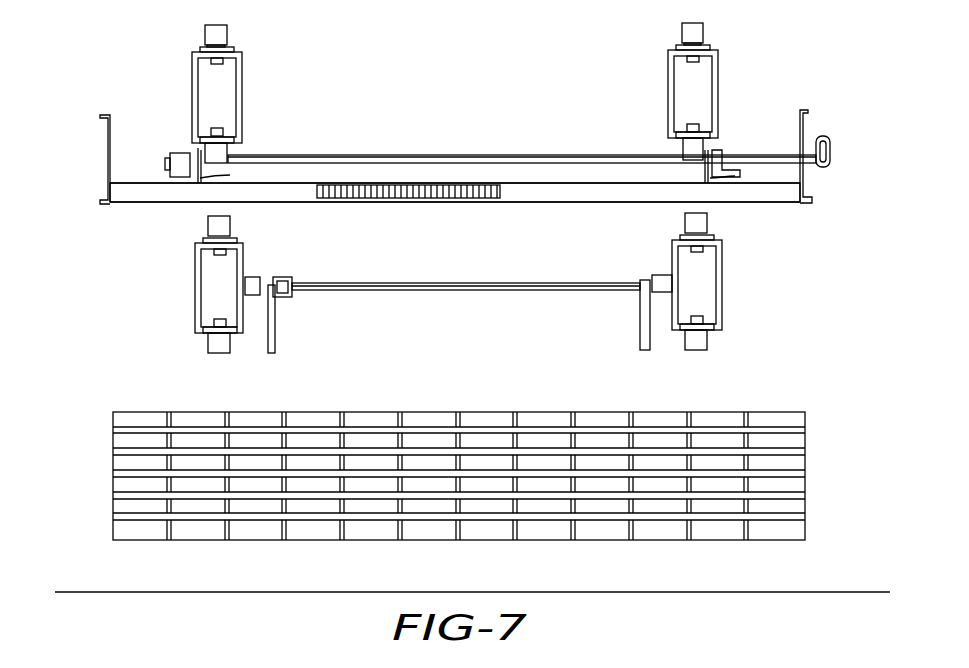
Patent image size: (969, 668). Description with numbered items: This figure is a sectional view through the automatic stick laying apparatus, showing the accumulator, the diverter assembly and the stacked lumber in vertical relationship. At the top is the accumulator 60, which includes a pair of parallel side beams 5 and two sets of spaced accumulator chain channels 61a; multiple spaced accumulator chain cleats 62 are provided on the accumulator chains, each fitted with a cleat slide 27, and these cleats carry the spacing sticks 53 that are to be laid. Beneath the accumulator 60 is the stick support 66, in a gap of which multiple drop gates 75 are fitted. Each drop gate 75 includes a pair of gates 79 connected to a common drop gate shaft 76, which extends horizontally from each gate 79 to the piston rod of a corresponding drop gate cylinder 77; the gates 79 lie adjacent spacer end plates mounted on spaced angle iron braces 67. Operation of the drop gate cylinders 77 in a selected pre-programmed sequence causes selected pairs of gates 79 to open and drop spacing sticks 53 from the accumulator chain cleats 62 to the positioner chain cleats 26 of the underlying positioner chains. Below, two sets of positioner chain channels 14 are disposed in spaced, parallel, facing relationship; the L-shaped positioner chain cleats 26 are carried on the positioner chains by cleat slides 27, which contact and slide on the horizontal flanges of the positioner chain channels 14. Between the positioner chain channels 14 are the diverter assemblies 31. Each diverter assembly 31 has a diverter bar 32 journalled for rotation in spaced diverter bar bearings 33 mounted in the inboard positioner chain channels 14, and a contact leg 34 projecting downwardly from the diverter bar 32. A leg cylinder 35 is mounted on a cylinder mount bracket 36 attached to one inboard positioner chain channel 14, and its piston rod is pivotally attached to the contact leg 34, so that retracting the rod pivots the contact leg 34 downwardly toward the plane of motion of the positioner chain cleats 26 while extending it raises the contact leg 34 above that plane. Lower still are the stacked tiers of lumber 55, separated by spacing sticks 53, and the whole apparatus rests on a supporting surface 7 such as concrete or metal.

The frame side beams 5 is at (110, 118).
The supporting surface 7 is at (162, 592).
The positioner chain channels 14 is at (243, 265).
The positioner chain cleats 26 is at (232, 228).
The cleat slides 27 is at (710, 50).
The diverter assemblies 31 is at (536, 261).
The diverter bar 32 is at (485, 290).
The diverter bar bearings 33 is at (662, 275).
The contact leg 34 is at (275, 322).
The leg cylinder 35 is at (285, 277).
The cylinder mount bracket 36 is at (255, 277).
The spacing sticks 53 is at (113, 479).
The lumber 55 is at (268, 410).
The accumulator 60 is at (527, 77).
The accumulator chain channels 61a is at (192, 103).
The accumulator chain cleats 62 is at (227, 34).
The stick support 66 is at (172, 177).
The angle iron braces 67 is at (500, 196).
The drop gates 75 is at (193, 185).
The drop gate shaft 76 is at (445, 155).
The drop gate cylinder 77 is at (824, 138).
The gates 79 is at (205, 176).